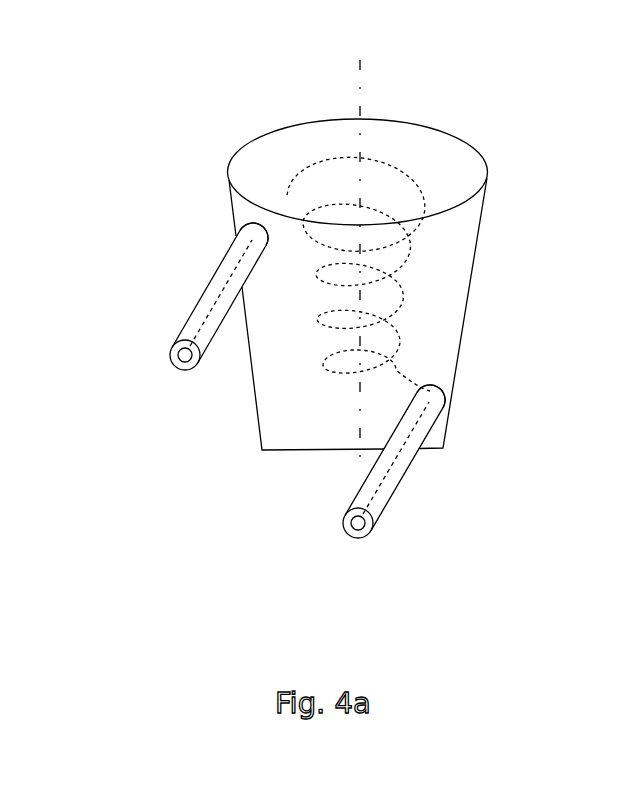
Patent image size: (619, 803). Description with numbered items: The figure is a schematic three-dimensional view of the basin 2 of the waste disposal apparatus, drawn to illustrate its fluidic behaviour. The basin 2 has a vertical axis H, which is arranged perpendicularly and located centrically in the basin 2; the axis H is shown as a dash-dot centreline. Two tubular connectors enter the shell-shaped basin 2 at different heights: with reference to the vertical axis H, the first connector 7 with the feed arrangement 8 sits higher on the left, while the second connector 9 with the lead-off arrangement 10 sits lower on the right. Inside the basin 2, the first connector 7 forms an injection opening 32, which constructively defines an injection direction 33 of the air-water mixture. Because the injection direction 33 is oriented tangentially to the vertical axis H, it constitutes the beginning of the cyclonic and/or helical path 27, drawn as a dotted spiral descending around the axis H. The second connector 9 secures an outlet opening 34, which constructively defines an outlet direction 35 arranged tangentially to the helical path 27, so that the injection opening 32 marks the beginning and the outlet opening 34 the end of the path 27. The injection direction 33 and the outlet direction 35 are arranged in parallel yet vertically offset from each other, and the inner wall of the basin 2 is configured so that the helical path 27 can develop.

The basin 2 is at (295, 127).
The vertical axis H is at (363, 85).
The cyclonic and/or helical path 27 is at (430, 167).
The first connector 7 is at (190, 296).
The feed arrangement 8 is at (208, 290).
The injection opening 32 is at (248, 232).
The injection direction 33 is at (287, 205).
The second connector 9 is at (422, 461).
The lead-off arrangement 10 is at (405, 478).
The outlet opening 34 is at (440, 418).
The outlet direction 35 is at (435, 393).